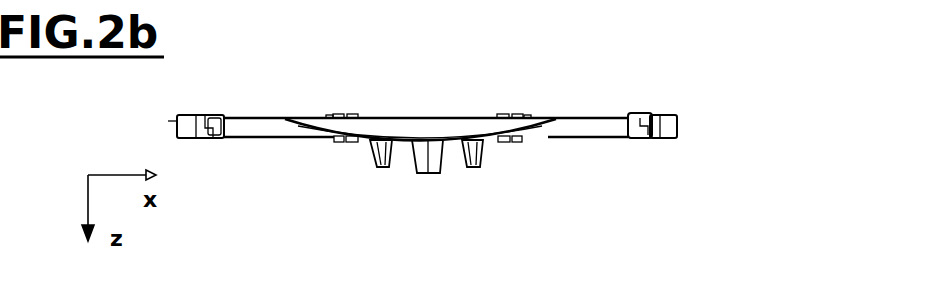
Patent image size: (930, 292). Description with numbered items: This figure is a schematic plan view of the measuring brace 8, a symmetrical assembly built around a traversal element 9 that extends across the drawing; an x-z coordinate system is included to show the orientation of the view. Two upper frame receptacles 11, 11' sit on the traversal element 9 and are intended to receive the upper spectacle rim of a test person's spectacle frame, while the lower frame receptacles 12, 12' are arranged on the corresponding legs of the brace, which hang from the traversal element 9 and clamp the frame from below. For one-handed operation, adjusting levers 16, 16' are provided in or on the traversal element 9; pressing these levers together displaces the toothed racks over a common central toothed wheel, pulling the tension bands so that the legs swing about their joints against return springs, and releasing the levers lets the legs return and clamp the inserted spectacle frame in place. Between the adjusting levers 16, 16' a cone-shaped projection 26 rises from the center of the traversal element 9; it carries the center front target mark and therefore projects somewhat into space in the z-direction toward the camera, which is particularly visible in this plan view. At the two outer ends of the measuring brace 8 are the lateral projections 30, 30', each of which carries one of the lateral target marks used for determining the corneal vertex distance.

The measuring brace 8 is at (661, 91).
The traversal element 9 is at (423, 116).
The upper frame receptacle 11 is at (298, 90).
The upper frame receptacle 11' is at (568, 90).
The lower frame receptacle 12 is at (355, 76).
The lower frame receptacle 12' is at (518, 77).
The adjusting lever 16 is at (363, 194).
The adjusting lever 16' is at (493, 194).
The cone-shaped projection 26 is at (438, 175).
The lateral projection 30 is at (171, 113).
The lateral projection 30' is at (687, 139).